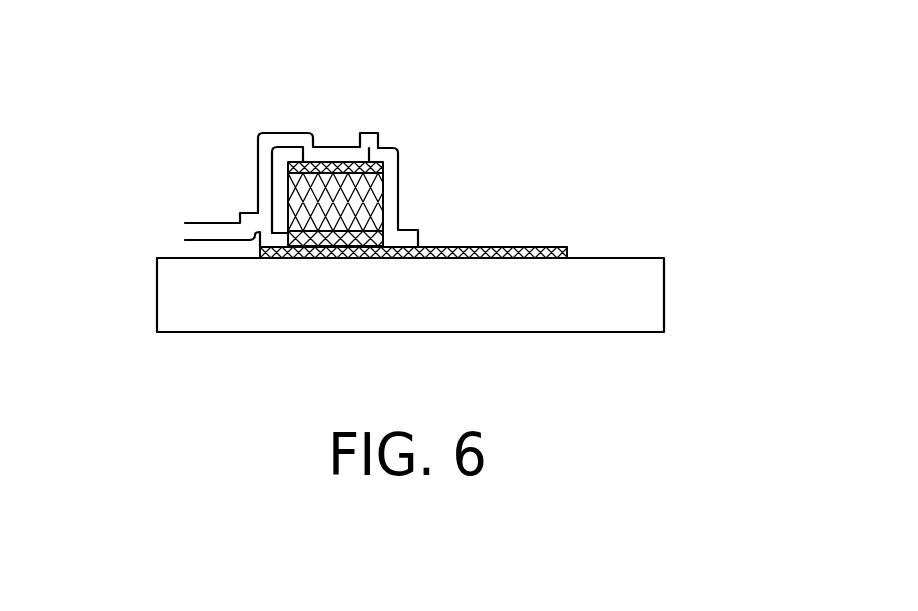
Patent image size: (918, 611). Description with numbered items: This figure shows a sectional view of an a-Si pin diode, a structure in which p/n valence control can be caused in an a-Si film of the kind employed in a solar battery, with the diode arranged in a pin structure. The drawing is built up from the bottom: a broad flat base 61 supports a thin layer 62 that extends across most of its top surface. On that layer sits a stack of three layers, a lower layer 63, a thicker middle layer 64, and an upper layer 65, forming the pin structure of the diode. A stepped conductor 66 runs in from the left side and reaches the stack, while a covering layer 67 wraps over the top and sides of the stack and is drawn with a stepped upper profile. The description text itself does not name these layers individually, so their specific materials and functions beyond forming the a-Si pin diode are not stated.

The substrate 61 is at (623, 307).
The lower insulating layer 62 is at (568, 248).
The lower electrode layer 63 is at (383, 232).
The dielectric layer 64 is at (358, 201).
The upper electrode layer 65 is at (378, 161).
The wiring layer 66 is at (277, 234).
The protective insulating film 67 is at (265, 144).